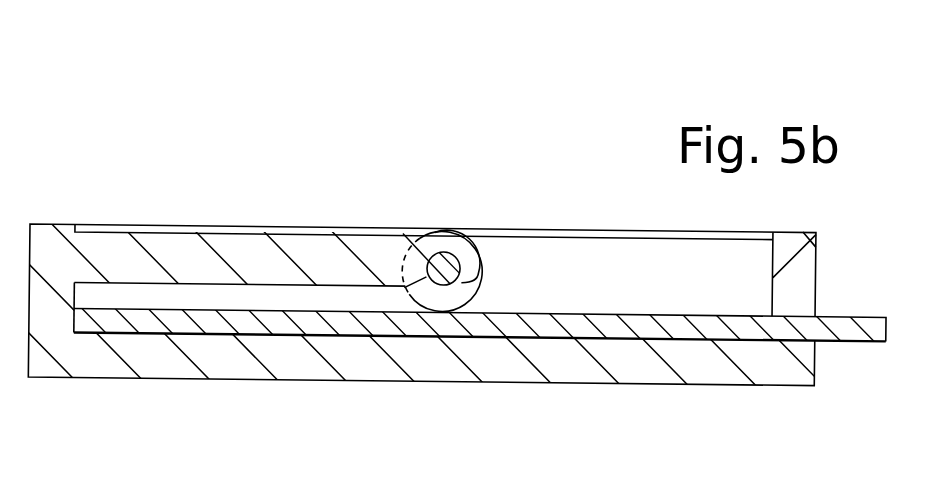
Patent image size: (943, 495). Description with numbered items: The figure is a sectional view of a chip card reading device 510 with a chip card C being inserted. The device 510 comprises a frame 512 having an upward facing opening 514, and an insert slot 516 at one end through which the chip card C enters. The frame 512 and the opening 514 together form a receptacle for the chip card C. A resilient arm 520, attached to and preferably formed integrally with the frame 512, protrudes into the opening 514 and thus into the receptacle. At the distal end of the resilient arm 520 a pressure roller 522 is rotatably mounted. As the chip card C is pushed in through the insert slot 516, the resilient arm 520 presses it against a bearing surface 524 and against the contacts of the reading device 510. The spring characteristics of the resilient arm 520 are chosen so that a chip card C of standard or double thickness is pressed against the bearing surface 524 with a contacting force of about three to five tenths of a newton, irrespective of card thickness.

The chip card reading device 510 is at (131, 147).
The frame 512 is at (168, 364).
The upward facing opening 514 is at (578, 265).
The insert slot 516 is at (803, 293).
The resilient arm 520 is at (262, 258).
The pressure roller 522 is at (443, 265).
The bearing surface 524 is at (386, 334).
The chip card C is at (547, 323).